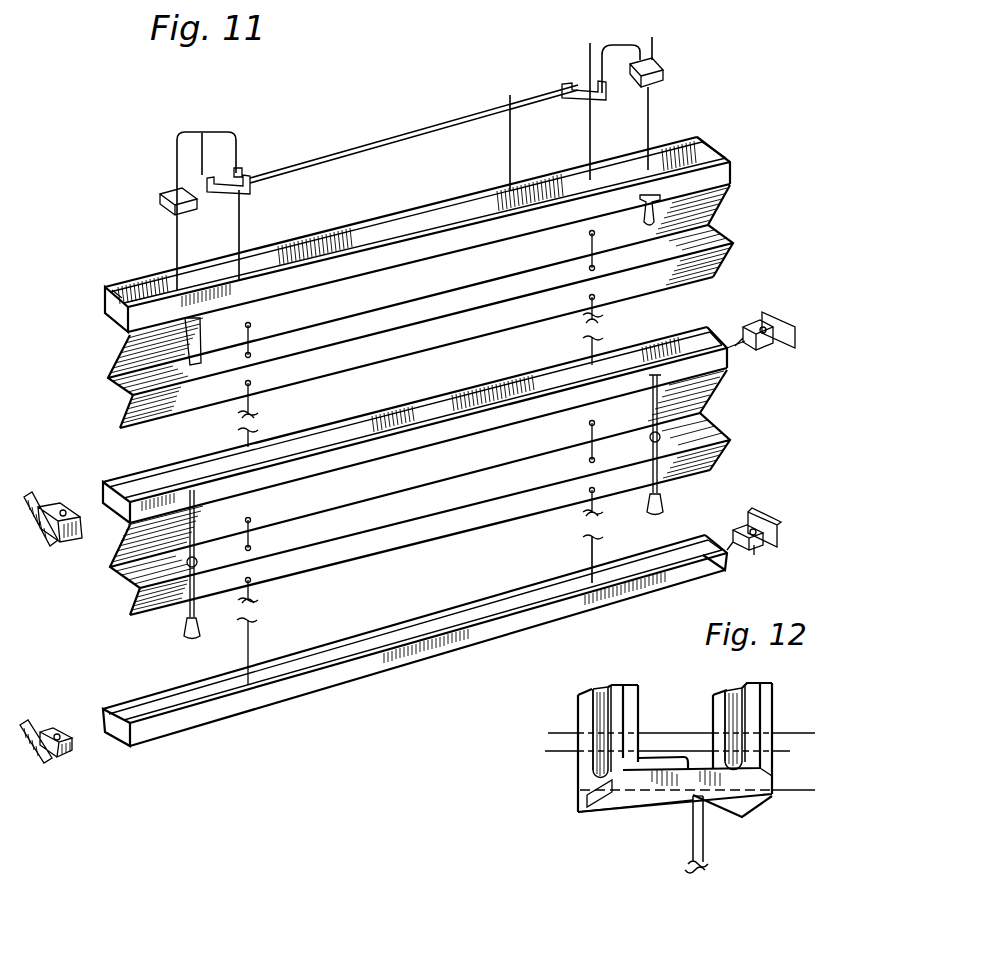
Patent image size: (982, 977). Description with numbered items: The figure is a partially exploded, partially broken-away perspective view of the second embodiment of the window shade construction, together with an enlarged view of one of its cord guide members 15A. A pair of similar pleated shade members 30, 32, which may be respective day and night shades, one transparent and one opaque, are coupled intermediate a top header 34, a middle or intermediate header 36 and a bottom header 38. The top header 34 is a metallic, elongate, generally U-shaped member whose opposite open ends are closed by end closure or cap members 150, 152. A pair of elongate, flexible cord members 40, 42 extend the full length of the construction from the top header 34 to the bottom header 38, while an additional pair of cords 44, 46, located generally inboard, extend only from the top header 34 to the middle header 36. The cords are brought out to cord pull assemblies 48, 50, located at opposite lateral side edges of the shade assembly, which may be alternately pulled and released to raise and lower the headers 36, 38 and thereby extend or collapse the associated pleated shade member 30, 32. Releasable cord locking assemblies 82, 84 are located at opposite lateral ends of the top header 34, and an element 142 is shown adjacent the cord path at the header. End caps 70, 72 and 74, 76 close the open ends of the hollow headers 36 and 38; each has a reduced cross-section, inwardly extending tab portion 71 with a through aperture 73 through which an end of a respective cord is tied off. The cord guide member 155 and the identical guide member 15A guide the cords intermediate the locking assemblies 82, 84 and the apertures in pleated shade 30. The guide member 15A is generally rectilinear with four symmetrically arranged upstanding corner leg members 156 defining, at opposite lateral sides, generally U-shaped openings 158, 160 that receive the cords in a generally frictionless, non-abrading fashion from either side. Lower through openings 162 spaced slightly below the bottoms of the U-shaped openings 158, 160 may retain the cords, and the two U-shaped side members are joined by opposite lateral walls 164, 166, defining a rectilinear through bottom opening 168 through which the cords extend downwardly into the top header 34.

In FIG. 11, the pleated shade member 30 is at (440, 296).
In FIG. 11, the pleated shade member 32 is at (458, 479).
In FIG. 11, the top header member 34 is at (462, 176).
In FIG. 11, the middle header member 36 is at (426, 370).
In FIG. 11, the bottom header member 38 is at (390, 592).
In FIG. 11, the cord member 40 is at (640, 36).
In FIG. 12, the cord member 40 is at (814, 790).
In FIG. 11, the cord member 42 is at (620, 17).
In FIG. 11, the cord 44 is at (177, 142).
In FIG. 12, the cord 44 is at (542, 756).
In FIG. 11, the cord 46 is at (202, 134).
In FIG. 12, the cord 46 is at (548, 734).
In FIG. 11, the cord pull assembly 48 is at (178, 640).
In FIG. 11, the cord pull assembly 50 is at (675, 494).
In FIG. 11, the end cap 70 is at (70, 752).
In FIG. 11, the tab portion 71 is at (60, 733).
In FIG. 11, the end cap 72 is at (773, 517).
In FIG. 11, the through aperture 73 is at (760, 544).
In FIG. 11, the end cap 74 is at (48, 496).
In FIG. 11, the end cap 76 is at (792, 325).
In FIG. 11, the releasable cord locking assembly 82 is at (160, 200).
In FIG. 11, the releasable cord locking assembly 84 is at (667, 70).
In FIG. 11, the bracket 142 is at (700, 200).
In FIG. 11, the end closure member 150 is at (107, 300).
In FIG. 11, the end closure member 152 is at (722, 145).
In FIG. 11, the cord guide member 155 is at (560, 88).
In FIG. 11, the cord retaining bracket 15A is at (240, 170).
In FIG. 12, the cord retaining bracket 15A is at (566, 712).
In FIG. 12, the upstanding corner leg member 156 is at (727, 697).
In FIG. 12, the U-shaped opening 158 is at (580, 785).
In FIG. 12, the U-shaped opening 160 is at (747, 724).
In FIG. 12, the lower through opening 162 is at (578, 798).
In FIG. 12, the lateral wall 164 is at (755, 781).
In FIG. 12, the lateral wall 166 is at (617, 817).
In FIG. 12, the bottom opening 168 is at (710, 810).